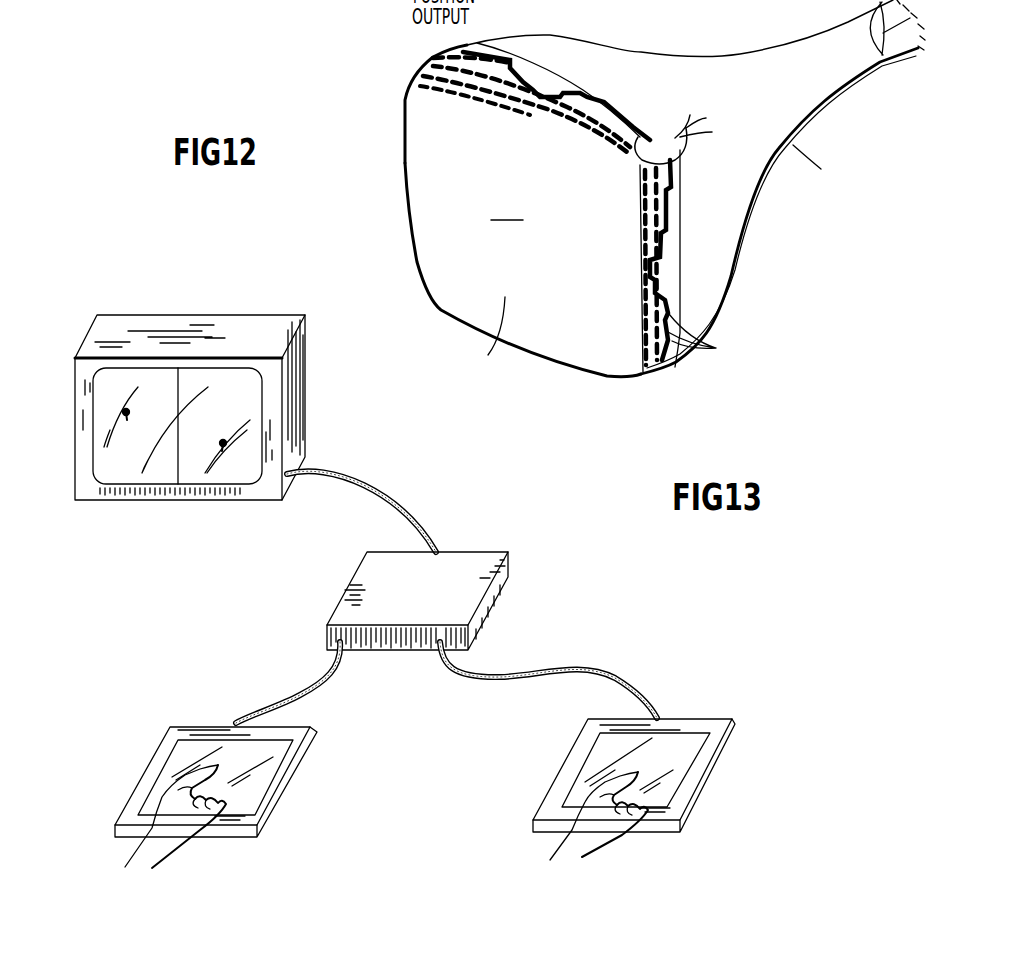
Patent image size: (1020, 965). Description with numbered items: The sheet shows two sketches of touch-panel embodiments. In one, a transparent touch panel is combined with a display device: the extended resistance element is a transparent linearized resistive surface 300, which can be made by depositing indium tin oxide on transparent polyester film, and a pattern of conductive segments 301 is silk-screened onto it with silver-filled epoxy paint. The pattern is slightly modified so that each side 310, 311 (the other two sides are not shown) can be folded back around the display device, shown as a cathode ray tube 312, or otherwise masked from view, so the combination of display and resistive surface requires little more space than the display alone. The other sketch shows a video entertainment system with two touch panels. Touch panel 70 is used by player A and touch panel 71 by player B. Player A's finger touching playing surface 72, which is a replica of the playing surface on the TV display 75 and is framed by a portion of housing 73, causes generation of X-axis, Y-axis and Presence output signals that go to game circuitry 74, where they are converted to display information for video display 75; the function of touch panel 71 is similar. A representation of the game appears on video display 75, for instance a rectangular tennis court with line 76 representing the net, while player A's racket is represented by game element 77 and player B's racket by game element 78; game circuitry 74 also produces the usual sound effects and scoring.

In FIG. 12, the touch panel 70 is at (219, 812).
In FIG. 12, the touch panel 71 is at (730, 742).
In FIG. 12, the playing surface 72 is at (255, 778).
In FIG. 12, the housing 73 is at (262, 813).
In FIG. 12, the game circuitry 74 is at (348, 585).
In FIG. 12, the video display 75 is at (75, 460).
In FIG. 12, the line 76 is at (177, 397).
In FIG. 12, the game element 77 is at (126, 412).
In FIG. 12, the game element 78 is at (223, 443).
In FIG. 13, the transparent linearized resistive surface 300 is at (558, 223).
In FIG. 13, the conductive segments 301 is at (705, 337).
In FIG. 13, the side of the pattern 310 is at (538, 74).
In FIG. 13, the side of the pattern 311 is at (676, 272).
In FIG. 13, the cathode ray tube 312 is at (745, 176).